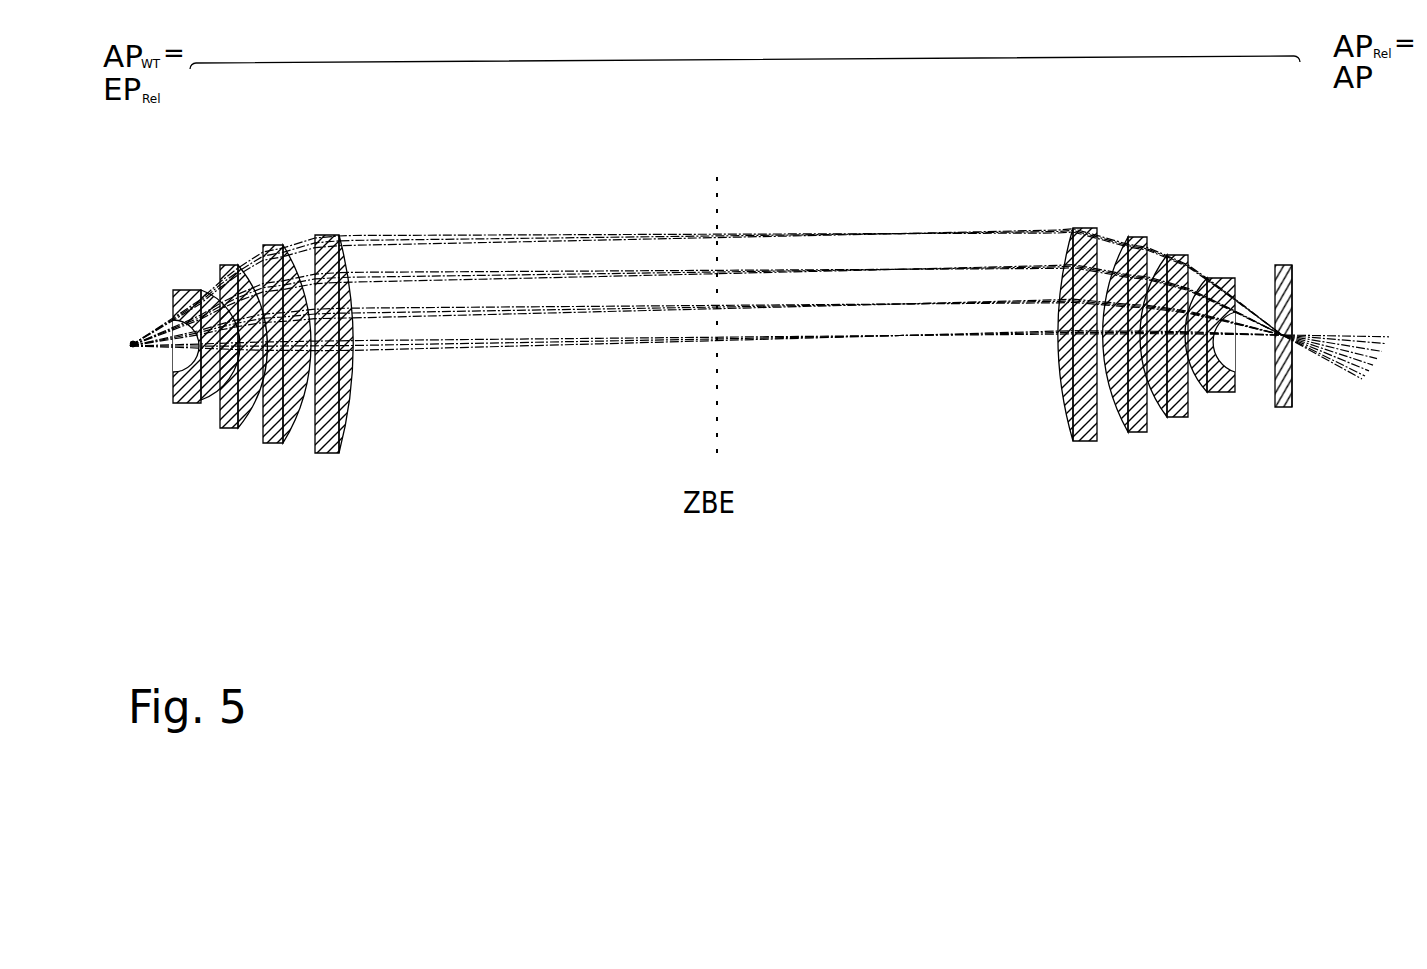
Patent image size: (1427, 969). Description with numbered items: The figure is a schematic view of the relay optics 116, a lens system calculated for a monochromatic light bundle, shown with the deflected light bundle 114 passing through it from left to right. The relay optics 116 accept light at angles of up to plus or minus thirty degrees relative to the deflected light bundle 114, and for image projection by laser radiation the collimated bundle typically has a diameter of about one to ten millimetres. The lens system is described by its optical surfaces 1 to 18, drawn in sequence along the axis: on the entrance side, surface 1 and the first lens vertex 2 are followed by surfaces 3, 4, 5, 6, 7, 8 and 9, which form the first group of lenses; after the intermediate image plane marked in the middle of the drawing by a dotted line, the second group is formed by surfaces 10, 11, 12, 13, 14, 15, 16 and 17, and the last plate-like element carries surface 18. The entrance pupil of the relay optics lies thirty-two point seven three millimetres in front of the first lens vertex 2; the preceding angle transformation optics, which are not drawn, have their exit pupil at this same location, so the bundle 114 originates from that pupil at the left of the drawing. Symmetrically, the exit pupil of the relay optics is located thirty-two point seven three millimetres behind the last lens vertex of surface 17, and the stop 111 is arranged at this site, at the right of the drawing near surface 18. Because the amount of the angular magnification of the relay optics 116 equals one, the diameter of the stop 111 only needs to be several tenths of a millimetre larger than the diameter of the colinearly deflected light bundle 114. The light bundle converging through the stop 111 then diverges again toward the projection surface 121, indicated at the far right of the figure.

The optical surface 1 is at (124, 297).
The first lens vertex 2 is at (181, 289).
The optical surface 3 is at (212, 288).
The optical surface 4 is at (228, 264).
The optical surface 5 is at (252, 266).
The optical surface 6 is at (268, 246).
The optical surface 7 is at (294, 247).
The optical surface 8 is at (318, 236).
The optical surface 9 is at (345, 237).
The optical surface 10 is at (1066, 255).
The optical surface 11 is at (1091, 230).
The optical surface 12 is at (1116, 256).
The optical surface 13 is at (1142, 249).
The optical surface 14 is at (1163, 257).
The optical surface 15 is at (1187, 255).
The optical surface 16 is at (1210, 278).
The last lens vertex surface 17 is at (1237, 280).
The optical surface 18 is at (1293, 300).
The stop 111 is at (1290, 408).
The deflected light bundle 114 is at (132, 350).
The relay optics 116 is at (745, 50).
The projection surface 121 is at (1426, 473).